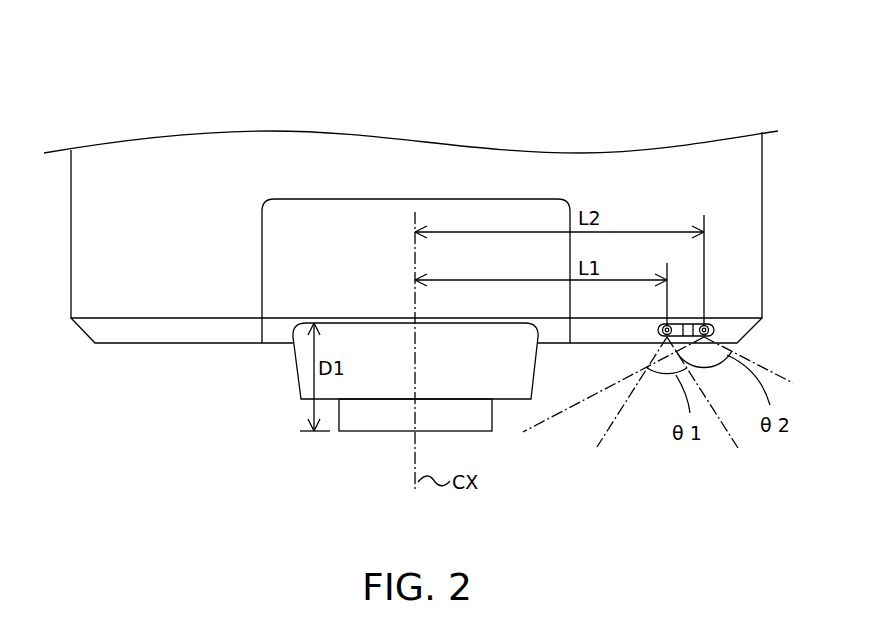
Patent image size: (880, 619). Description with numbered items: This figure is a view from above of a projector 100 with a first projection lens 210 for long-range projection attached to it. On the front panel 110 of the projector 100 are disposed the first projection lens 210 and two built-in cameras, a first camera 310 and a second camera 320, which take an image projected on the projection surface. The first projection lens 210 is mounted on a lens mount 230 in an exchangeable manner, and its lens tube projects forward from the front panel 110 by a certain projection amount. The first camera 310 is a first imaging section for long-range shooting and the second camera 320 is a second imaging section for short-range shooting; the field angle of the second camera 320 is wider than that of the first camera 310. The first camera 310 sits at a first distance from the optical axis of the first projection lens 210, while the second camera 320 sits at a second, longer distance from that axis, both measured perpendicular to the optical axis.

The projector 100 is at (411, 235).
The front panel 110 is at (182, 331).
The first projection lens 210 is at (452, 432).
The lens mount 230 is at (540, 368).
The first camera 310 is at (661, 347).
The second camera 320 is at (708, 347).